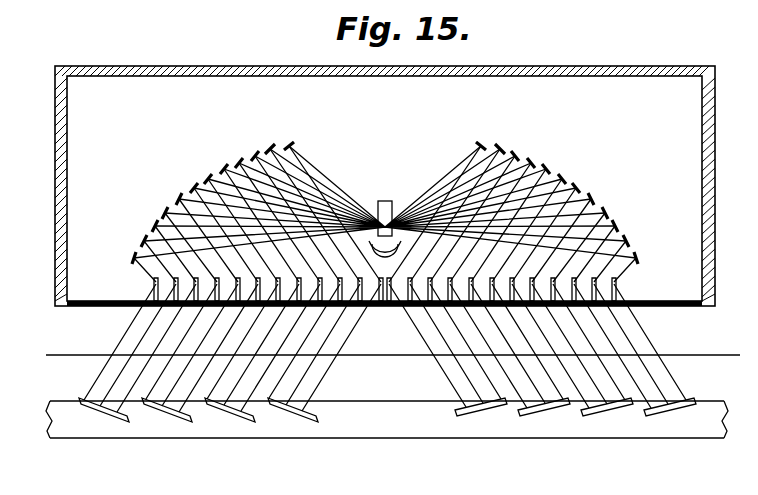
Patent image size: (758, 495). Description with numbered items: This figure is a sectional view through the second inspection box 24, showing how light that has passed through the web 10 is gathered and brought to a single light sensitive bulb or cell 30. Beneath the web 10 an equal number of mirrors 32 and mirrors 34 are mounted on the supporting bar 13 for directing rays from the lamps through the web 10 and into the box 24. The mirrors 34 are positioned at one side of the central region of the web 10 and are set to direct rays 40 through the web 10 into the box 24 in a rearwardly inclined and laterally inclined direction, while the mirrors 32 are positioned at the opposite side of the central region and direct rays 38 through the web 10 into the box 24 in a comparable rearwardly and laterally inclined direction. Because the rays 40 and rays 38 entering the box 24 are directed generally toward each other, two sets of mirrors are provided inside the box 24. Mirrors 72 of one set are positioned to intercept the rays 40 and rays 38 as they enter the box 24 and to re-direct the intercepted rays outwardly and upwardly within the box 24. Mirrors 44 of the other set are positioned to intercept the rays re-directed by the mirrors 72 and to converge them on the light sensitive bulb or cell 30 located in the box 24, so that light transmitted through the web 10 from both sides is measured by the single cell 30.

The web 10 is at (50, 353).
The supporting bar 13 is at (350, 426).
The box 24 is at (206, 66).
The light sensitive bulb or cell 30 is at (392, 218).
The mirrors 32 is at (665, 414).
The mirrors 34 is at (292, 420).
The rays 38 is at (455, 333).
The rays 40 is at (330, 324).
The mirrors 44 is at (204, 178).
The mirrors 72 is at (151, 289).